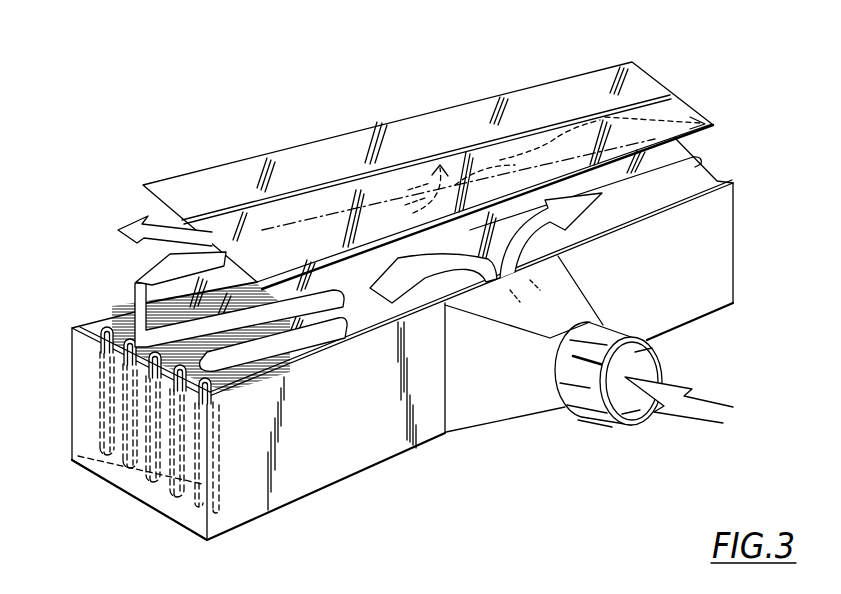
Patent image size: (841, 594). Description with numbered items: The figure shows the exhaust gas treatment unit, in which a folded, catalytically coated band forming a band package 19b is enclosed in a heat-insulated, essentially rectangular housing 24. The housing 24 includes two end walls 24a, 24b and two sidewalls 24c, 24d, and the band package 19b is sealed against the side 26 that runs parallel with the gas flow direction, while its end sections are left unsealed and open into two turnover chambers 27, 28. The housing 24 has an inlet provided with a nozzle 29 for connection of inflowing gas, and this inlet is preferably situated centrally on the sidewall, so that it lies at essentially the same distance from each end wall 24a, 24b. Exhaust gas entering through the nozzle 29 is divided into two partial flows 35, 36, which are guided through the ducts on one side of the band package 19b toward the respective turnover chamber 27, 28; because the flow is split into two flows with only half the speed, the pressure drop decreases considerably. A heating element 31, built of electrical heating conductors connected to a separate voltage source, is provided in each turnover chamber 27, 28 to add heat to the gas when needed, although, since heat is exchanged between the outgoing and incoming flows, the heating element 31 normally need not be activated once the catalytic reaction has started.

The band package 19b is at (553, 92).
The housing 24 is at (303, 478).
The end wall 24a is at (153, 490).
The end wall 24b is at (738, 241).
The sidewall 24c is at (352, 452).
The sidewall 24d is at (118, 321).
The side of band package 26 is at (665, 94).
The turnover chamber 27 is at (93, 327).
The turnover chamber 28 is at (718, 182).
The nozzle 29 is at (583, 388).
The heating element 31 is at (100, 337).
The partial flow 35 is at (582, 224).
The partial flow 36 is at (373, 286).